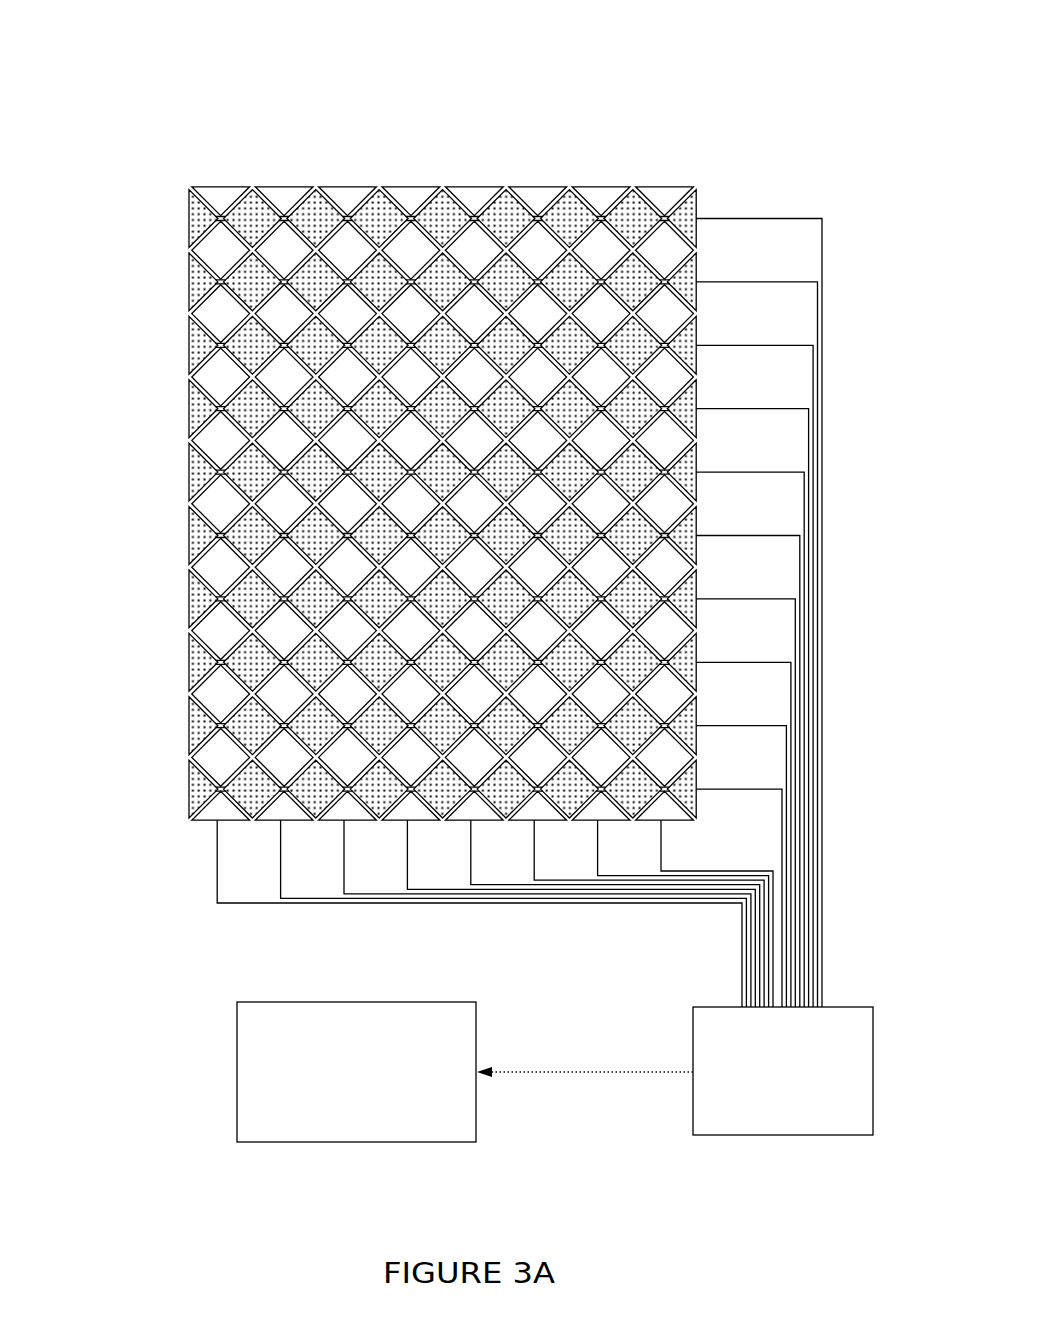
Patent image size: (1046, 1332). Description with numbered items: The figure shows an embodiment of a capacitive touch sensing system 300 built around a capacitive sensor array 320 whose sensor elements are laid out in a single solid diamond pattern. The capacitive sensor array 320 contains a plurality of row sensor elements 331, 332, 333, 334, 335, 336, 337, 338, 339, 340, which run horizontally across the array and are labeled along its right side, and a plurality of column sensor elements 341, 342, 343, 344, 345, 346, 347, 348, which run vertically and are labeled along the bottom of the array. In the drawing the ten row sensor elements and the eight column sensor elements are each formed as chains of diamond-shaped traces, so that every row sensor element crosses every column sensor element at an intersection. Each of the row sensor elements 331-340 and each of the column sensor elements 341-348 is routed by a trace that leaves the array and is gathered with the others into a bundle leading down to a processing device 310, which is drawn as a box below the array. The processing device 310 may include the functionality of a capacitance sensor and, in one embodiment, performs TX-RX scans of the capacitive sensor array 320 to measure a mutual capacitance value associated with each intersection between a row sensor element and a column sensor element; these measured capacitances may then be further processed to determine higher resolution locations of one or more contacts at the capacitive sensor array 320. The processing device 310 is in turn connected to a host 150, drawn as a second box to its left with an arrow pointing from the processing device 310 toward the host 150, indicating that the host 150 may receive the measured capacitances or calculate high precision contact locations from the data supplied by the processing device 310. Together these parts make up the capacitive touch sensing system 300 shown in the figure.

The capacitive touch sensing system 300 is at (261, 92).
The capacitive sensor array 320 is at (698, 77).
The processing device 310 is at (766, 1102).
The host 150 is at (340, 1096).
The row sensor element 331 is at (485, 883).
The row sensor element 332 is at (487, 852).
The row sensor element 333 is at (490, 820).
The row sensor element 334 is at (492, 788).
The row sensor element 335 is at (494, 757).
The row sensor element 336 is at (496, 725).
The row sensor element 337 is at (499, 693).
The row sensor element 338 is at (501, 661).
The row sensor element 339 is at (503, 630).
The row sensor element 340 is at (505, 599).
The column sensor element 341 is at (704, 597).
The column sensor element 342 is at (670, 597).
The column sensor element 343 is at (636, 597).
The column sensor element 344 is at (602, 597).
The column sensor element 345 is at (568, 597).
The column sensor element 346 is at (535, 597).
The column sensor element 347 is at (500, 597).
The column sensor element 348 is at (467, 597).